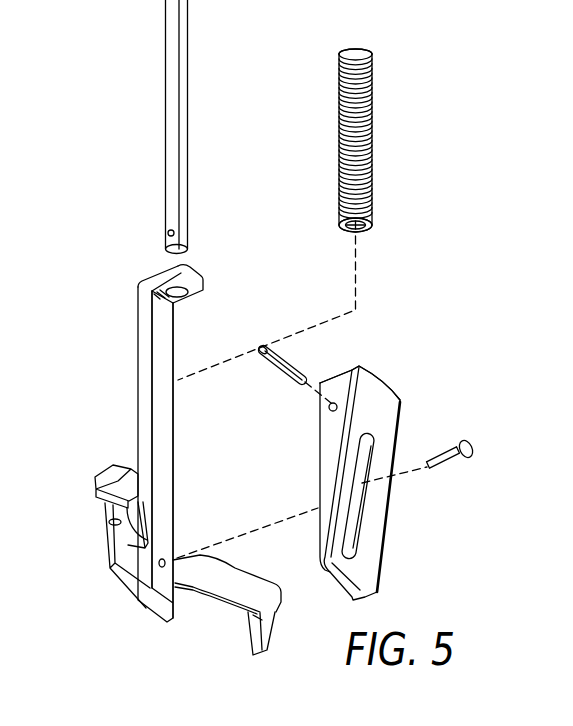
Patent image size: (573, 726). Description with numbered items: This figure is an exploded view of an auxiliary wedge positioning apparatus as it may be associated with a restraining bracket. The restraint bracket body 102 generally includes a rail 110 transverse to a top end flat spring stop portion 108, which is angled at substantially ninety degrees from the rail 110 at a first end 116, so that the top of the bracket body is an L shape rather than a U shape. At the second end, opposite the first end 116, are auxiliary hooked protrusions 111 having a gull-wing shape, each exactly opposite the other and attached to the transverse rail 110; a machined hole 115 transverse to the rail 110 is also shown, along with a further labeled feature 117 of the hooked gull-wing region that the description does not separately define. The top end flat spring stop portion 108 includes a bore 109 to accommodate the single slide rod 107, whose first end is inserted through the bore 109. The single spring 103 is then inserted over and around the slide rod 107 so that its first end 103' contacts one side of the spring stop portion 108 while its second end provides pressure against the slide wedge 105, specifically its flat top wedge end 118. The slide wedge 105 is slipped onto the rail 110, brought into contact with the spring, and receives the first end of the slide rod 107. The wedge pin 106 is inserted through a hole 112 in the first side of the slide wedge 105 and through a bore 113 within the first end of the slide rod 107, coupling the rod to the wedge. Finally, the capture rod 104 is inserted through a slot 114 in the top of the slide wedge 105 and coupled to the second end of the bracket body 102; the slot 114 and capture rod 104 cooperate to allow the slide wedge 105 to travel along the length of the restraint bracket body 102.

The restraint bracket body 102 is at (161, 460).
The single spring 103 is at (392, 130).
The first end of spring 103' is at (385, 31).
The capture rod 104 is at (441, 452).
The slide wedge 105 is at (365, 465).
The pin 106 is at (280, 368).
The single slide rod 107 is at (167, 88).
The top end flat spring stop portion 108 is at (161, 272).
The bore 109 is at (178, 298).
The rail 110 is at (165, 427).
The hooked protrusions 111 is at (110, 545).
The hole 112 is at (329, 406).
The bore 113 is at (169, 231).
The slot 114 is at (355, 528).
The machined hole 115 is at (112, 528).
The first end 116 is at (143, 280).
The hook 117 is at (110, 565).
The top wedge end 118 is at (337, 378).